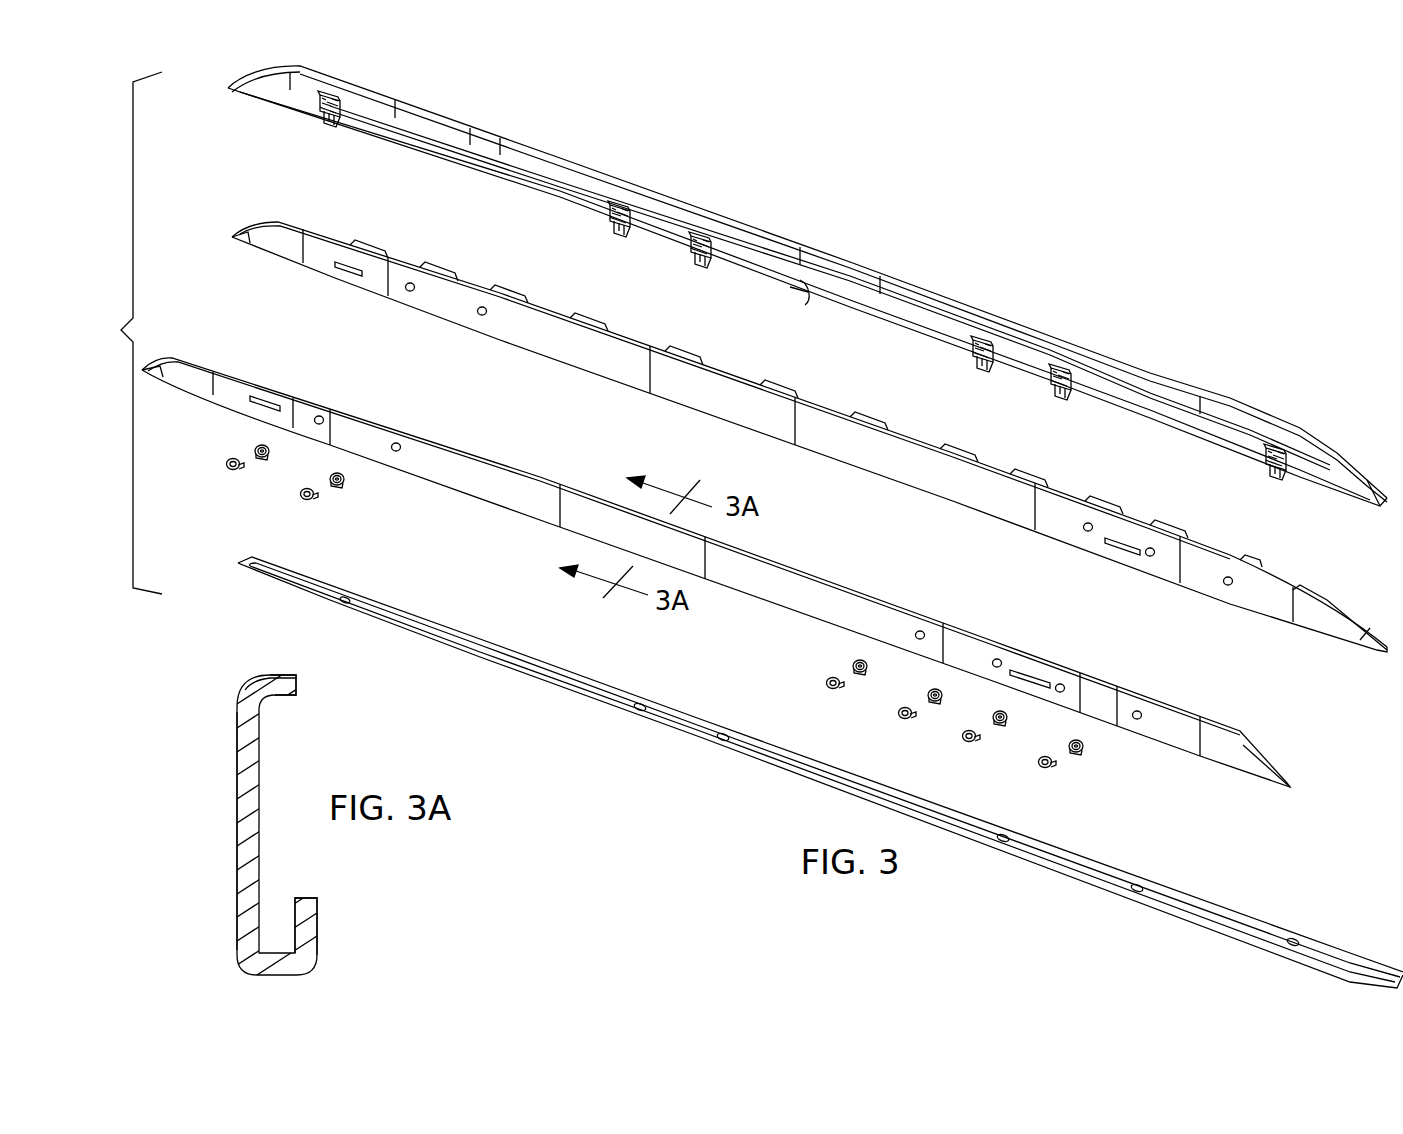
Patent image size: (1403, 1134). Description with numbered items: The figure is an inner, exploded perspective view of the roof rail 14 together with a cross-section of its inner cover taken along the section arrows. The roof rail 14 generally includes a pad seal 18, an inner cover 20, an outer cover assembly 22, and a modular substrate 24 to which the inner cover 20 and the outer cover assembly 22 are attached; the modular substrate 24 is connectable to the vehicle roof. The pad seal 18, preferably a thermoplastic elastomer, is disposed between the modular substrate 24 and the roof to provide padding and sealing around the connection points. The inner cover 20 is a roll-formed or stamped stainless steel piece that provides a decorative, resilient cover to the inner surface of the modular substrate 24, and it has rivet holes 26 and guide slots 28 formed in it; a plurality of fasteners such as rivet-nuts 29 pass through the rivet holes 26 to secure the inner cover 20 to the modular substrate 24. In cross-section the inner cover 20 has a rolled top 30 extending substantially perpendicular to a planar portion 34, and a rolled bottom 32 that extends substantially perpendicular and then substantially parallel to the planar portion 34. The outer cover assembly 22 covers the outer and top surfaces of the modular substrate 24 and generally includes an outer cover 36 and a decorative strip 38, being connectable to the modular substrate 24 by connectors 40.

In FIG. 3, the roof rail 14 is at (124, 333).
In FIG. 3, the pad seal 18 is at (1342, 963).
In FIG. 3, the inner cover 20 is at (716, 548).
In FIG. 3A, the inner cover 20 is at (237, 822).
In FIG. 3, the outer cover assembly 22 is at (807, 286).
In FIG. 3, the modular substrate 24 is at (1352, 624).
In FIG. 3, the rivet holes 26 is at (316, 417).
In FIG. 3, the guide slots 28 is at (250, 398).
In FIG. 3, the rivet-nuts 29 is at (1100, 747).
In FIG. 3A, the rolled top 30 is at (285, 675).
In FIG. 3A, the rolled bottom 32 is at (317, 918).
In FIG. 3A, the planar portion 34 is at (237, 772).
In FIG. 3, the outer cover 36 is at (848, 268).
In FIG. 3, the decorative strip 38 is at (807, 290).
In FIG. 3, the connectors 40 is at (322, 104).